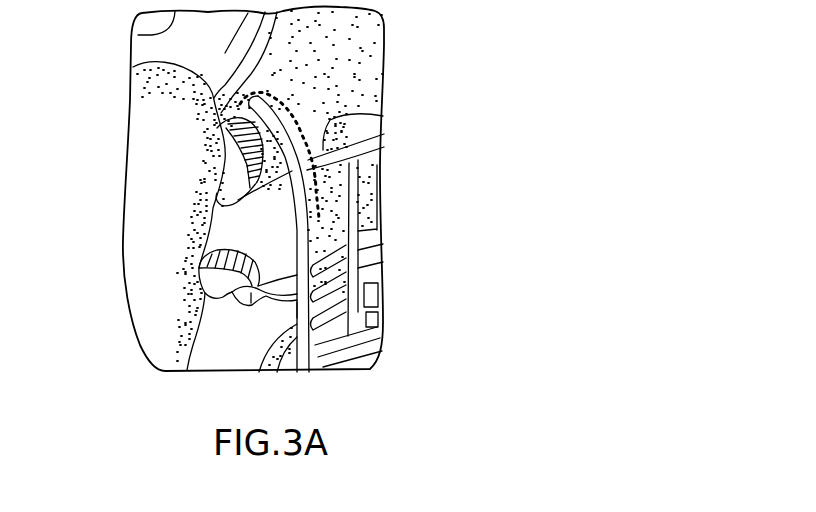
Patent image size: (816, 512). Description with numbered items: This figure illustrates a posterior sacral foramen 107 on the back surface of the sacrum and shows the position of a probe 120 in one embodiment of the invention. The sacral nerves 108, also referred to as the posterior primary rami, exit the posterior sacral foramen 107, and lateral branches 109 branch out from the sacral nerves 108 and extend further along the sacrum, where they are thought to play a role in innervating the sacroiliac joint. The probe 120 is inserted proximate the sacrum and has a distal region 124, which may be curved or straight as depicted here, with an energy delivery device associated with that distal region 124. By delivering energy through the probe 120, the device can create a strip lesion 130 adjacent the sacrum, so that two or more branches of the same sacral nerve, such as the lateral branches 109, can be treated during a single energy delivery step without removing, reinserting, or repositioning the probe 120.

The posterior sacral foramen 107 is at (238, 169).
The sacral nerves 108 is at (241, 204).
The lateral branches 109 is at (383, 116).
The probe 120 is at (296, 310).
The distal region 124 is at (308, 203).
The strip lesion 130 is at (290, 113).